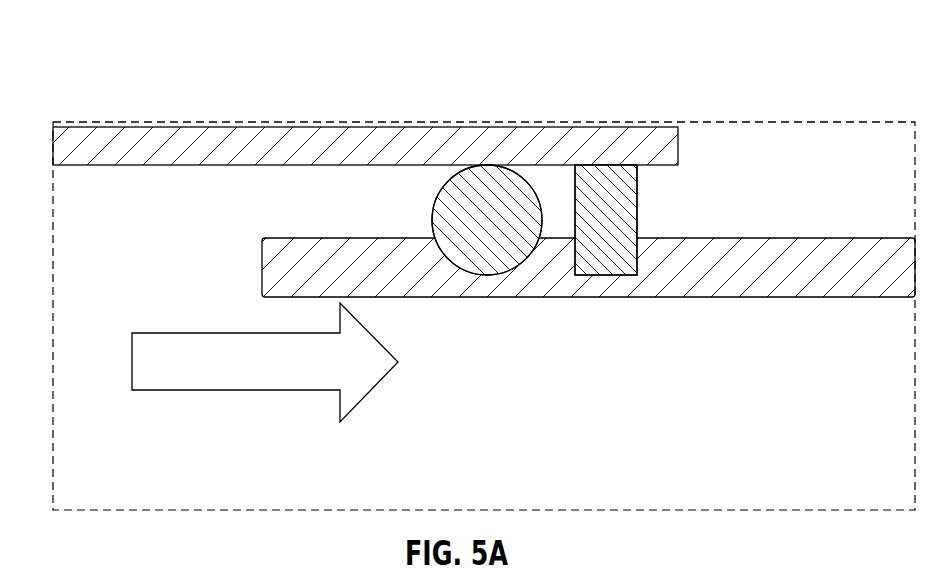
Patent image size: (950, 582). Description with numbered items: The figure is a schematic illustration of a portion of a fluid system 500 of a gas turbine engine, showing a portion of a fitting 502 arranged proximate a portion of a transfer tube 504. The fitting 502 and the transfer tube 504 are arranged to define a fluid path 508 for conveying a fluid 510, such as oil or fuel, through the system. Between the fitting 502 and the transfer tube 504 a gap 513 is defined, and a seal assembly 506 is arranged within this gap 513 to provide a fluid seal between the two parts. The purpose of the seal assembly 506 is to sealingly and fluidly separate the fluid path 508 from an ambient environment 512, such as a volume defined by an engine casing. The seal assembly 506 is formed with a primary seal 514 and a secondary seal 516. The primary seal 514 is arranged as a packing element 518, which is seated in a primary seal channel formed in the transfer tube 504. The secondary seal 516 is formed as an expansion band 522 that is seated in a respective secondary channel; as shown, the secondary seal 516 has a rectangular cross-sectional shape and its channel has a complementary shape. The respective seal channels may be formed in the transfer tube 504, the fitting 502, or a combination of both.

The fluid system 500 is at (100, 39).
The fitting 502 is at (240, 128).
The transfer tube 504 is at (838, 298).
The seal assembly 506 is at (583, 118).
The fluid path 508 is at (600, 384).
The fluid 510 is at (283, 387).
The ambient environment 512 is at (885, 208).
The gap 513 is at (204, 201).
The primary seal 514 is at (429, 220).
The secondary seal 516 is at (643, 210).
The packing element 518 is at (490, 200).
The expansion band 522 is at (607, 256).